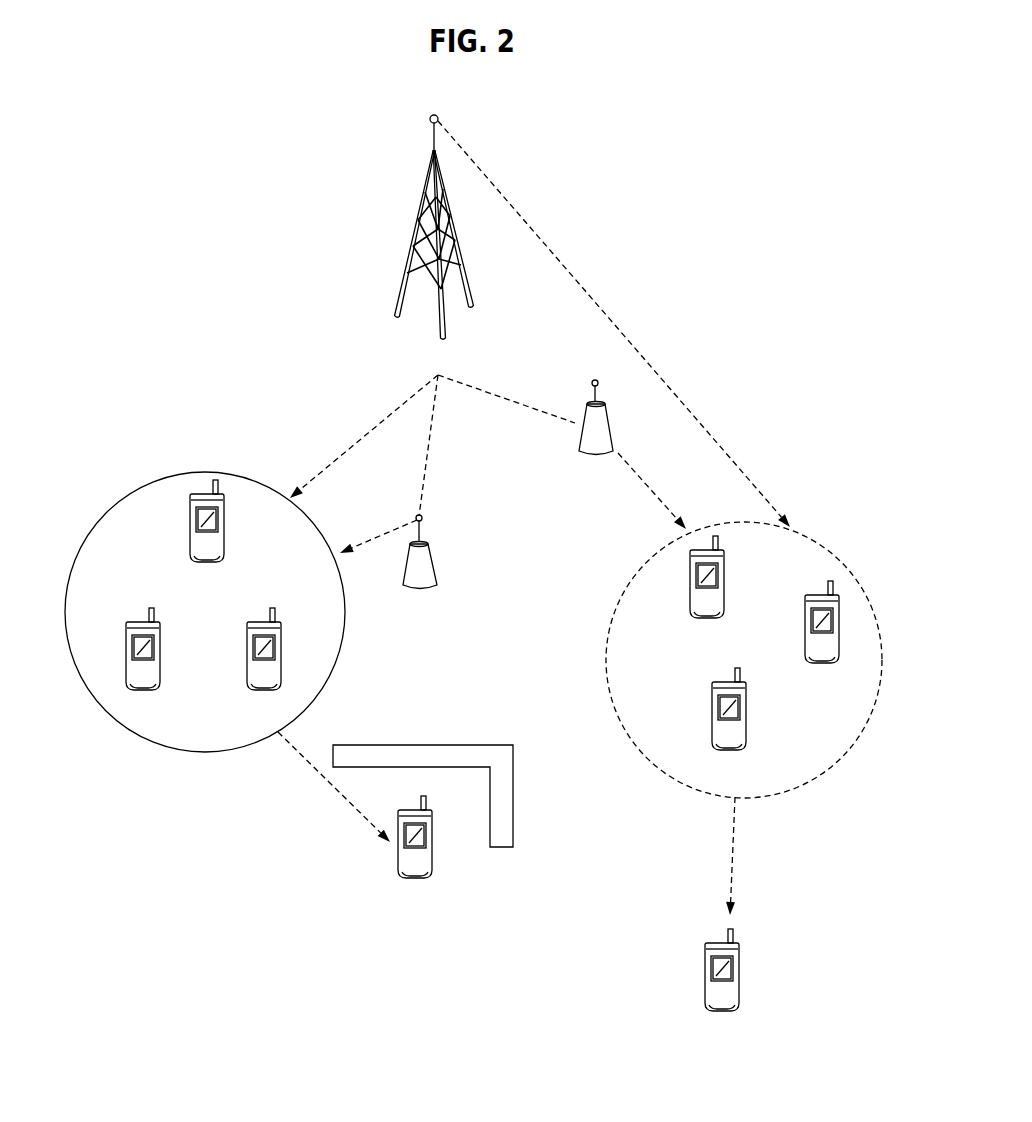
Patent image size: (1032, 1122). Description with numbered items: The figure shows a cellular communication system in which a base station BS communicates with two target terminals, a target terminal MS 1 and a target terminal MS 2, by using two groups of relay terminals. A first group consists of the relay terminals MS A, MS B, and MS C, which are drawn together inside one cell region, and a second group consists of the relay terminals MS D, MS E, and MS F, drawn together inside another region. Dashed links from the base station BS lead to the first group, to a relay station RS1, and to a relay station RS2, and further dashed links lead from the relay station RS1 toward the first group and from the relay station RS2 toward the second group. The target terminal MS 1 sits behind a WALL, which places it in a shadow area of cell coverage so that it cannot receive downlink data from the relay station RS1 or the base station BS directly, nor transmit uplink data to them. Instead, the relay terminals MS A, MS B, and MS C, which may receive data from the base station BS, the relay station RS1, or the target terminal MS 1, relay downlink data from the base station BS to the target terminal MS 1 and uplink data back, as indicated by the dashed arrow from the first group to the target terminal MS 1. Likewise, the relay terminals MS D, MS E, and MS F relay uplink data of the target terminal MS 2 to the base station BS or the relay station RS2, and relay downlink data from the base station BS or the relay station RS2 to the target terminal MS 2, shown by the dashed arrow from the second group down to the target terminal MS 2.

The base station BS is at (434, 243).
The relay station 1 RS1 is at (443, 552).
The relay station 2 RS2 is at (621, 417).
The relay terminal MS A is at (207, 537).
The relay terminal MS B is at (145, 664).
The relay terminal MS C is at (267, 664).
The relay terminal MS D is at (708, 593).
The relay terminal MS E is at (732, 725).
The relay terminal MS F is at (825, 638).
The target terminal 1 MS 1 is at (415, 854).
The target terminal 2 MS 2 is at (723, 987).
The wall WALL is at (503, 795).